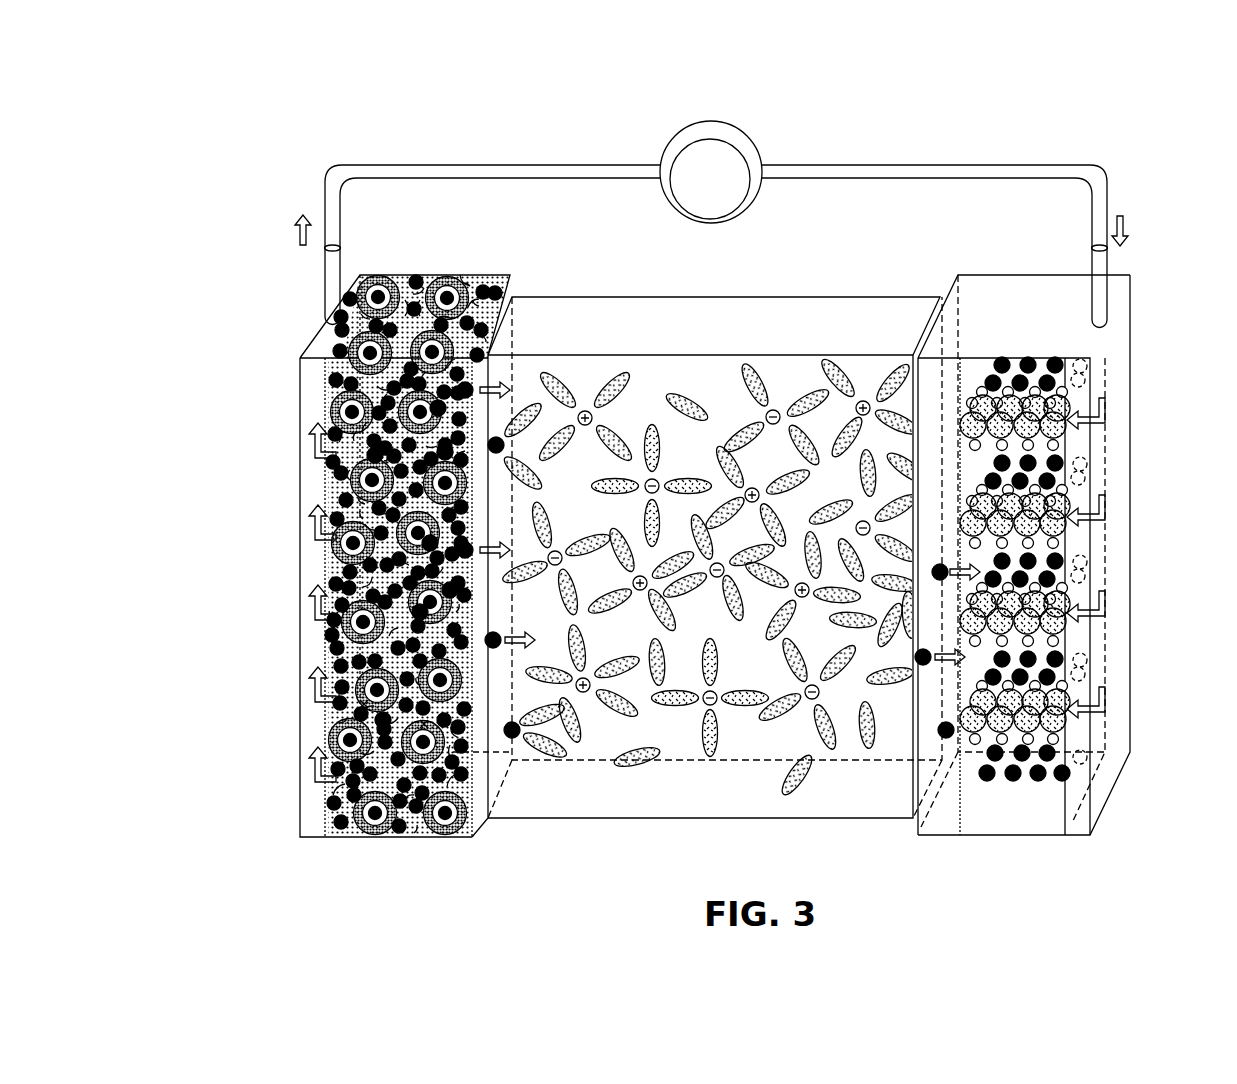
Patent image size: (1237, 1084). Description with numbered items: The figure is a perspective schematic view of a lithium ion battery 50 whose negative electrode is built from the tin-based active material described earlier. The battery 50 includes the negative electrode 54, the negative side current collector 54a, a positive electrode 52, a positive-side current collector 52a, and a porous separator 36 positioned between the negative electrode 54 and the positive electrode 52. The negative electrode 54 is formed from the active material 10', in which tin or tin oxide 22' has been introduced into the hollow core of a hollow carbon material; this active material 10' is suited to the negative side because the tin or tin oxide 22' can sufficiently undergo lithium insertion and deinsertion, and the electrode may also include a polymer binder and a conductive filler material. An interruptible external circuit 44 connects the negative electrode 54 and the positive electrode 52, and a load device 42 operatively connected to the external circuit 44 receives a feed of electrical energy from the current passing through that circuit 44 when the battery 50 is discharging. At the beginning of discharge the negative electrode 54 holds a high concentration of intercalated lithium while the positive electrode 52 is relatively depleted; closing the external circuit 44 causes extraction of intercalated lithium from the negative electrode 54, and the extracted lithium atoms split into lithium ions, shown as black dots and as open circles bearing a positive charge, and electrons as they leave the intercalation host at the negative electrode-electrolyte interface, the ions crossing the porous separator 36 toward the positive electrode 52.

The lithium ion battery 50 is at (699, 480).
The interruptible external circuit 44 is at (512, 165).
The load device 42 is at (712, 120).
The negative electrode 54 is at (367, 546).
The negative side current collector 54a is at (312, 790).
The active material 10' is at (427, 546).
The tin or tin oxide 22' is at (375, 554).
The porous separator 36 is at (778, 324).
The positive electrode 52 is at (1059, 522).
The positive-side current collector 52a is at (1085, 812).